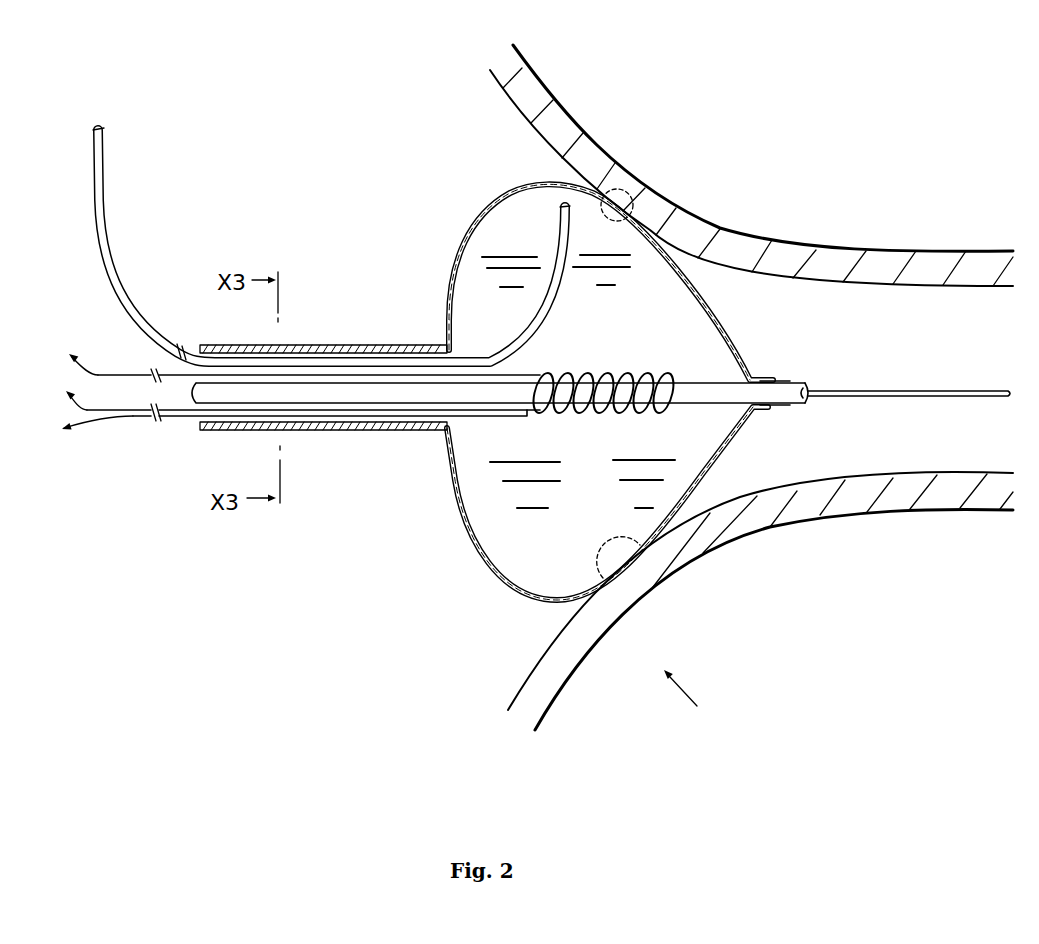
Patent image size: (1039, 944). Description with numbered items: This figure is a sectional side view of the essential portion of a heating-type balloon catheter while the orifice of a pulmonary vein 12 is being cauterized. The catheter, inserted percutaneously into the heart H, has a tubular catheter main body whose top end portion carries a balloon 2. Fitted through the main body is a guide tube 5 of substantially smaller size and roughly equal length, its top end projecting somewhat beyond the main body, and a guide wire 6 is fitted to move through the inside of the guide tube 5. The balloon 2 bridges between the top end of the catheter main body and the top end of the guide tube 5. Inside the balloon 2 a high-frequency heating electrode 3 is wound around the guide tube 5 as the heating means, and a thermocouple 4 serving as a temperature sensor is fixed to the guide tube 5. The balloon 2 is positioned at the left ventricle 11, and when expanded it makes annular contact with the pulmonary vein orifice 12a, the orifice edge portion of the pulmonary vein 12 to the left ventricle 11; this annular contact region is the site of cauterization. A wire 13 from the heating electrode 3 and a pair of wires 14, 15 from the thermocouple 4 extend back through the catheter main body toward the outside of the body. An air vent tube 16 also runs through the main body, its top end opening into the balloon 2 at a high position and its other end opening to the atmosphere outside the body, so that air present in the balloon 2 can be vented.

The balloon 2 is at (492, 207).
The high-frequency heating electrode 3 is at (630, 376).
The thermocouple 4 is at (521, 411).
The guide tube 5 is at (791, 390).
The guide wire 6 is at (903, 392).
The left ventricle 11 is at (437, 612).
The pulmonary vein 12 is at (797, 509).
The pulmonary vein orifice 12a is at (682, 227).
The wire 13 is at (128, 375).
The wire 14 is at (130, 416).
The wire 15 is at (122, 408).
The air vent tube 16 is at (112, 207).
The heart H is at (690, 694).